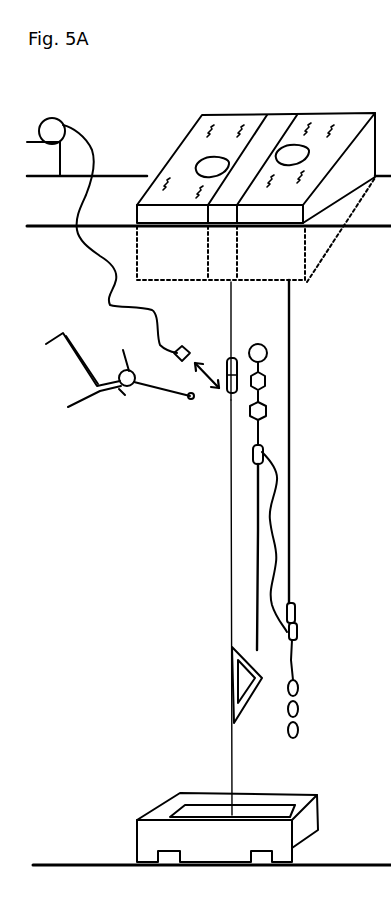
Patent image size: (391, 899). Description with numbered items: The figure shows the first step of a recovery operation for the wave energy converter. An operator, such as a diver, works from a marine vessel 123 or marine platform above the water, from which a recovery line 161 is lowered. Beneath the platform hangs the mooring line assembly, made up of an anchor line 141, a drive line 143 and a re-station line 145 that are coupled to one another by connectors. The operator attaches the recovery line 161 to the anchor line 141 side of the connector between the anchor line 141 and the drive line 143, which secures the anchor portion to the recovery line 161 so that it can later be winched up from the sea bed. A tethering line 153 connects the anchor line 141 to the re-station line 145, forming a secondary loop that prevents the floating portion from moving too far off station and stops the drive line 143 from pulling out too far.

The marine vessel 123 is at (37, 152).
The recovery line 161 is at (88, 253).
The drive line 143 is at (229, 313).
The anchor line 141 is at (228, 498).
The tethering line 153 is at (270, 524).
The re-station line 145 is at (295, 664).